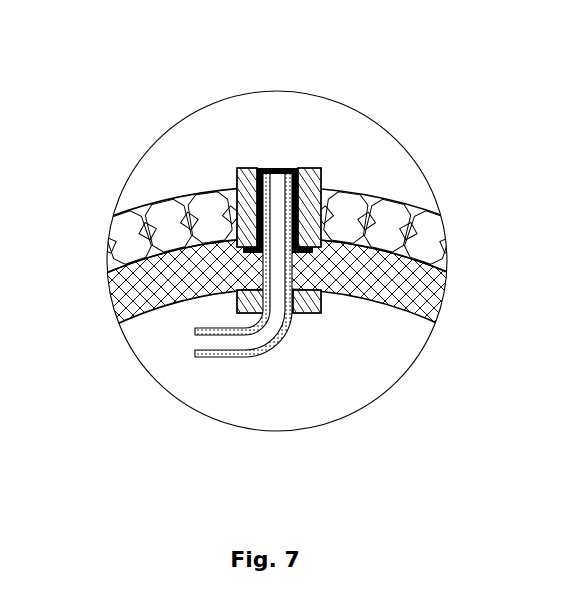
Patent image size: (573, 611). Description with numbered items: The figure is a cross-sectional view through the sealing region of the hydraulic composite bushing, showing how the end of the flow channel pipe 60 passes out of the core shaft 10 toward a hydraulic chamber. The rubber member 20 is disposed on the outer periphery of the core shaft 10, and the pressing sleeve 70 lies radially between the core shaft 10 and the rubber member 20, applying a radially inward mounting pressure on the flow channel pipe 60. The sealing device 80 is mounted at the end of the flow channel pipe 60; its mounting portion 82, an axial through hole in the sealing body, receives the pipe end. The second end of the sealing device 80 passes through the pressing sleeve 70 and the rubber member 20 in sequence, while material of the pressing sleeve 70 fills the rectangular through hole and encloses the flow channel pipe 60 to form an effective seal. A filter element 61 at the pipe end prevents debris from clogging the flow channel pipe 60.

The core shaft 10 is at (227, 385).
The rubber member 20 is at (163, 233).
The pressing sleeve 70 is at (122, 294).
The flow channel pipe 60 is at (297, 170).
The filter element 61 is at (303, 190).
The mounting portion 82 is at (303, 227).
The sealing device 80 is at (240, 283).